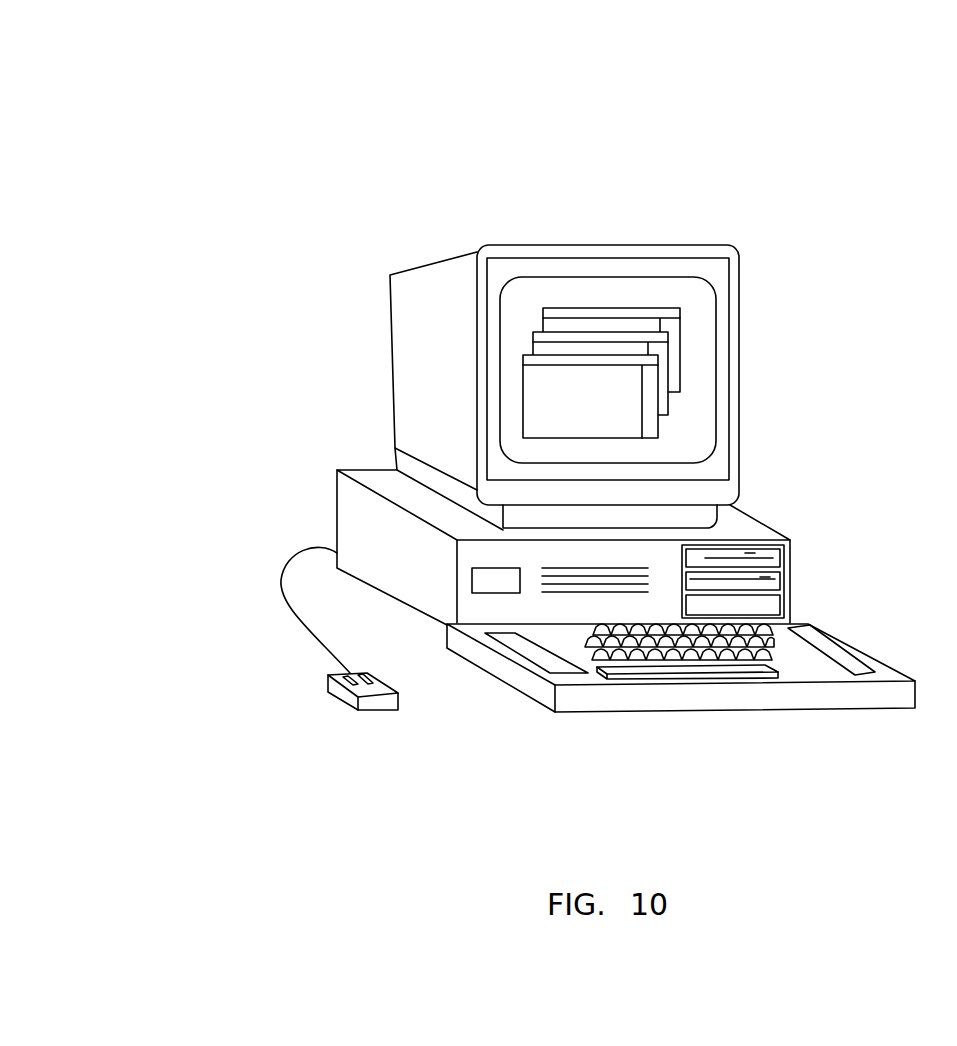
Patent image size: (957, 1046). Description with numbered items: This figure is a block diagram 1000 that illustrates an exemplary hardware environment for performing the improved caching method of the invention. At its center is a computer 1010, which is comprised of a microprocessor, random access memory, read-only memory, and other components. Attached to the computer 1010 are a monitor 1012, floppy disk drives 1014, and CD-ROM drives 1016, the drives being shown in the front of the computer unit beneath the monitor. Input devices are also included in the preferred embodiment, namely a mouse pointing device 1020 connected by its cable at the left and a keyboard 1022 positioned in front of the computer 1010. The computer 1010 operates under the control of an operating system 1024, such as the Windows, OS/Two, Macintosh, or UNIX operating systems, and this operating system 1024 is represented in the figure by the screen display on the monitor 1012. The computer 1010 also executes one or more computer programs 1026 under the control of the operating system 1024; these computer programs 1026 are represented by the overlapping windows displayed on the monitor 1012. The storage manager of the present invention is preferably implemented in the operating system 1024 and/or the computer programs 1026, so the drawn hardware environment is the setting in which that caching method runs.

The block diagram 1000 is at (755, 195).
The computer 1010 is at (758, 523).
The monitor 1012 is at (632, 247).
The floppy disk drives 1014 is at (772, 563).
The CD-ROM drives 1016 is at (773, 607).
The mouse pointing device 1020 is at (328, 693).
The keyboard 1022 is at (845, 698).
The operating system 1024 is at (525, 295).
The computer programs 1026 is at (693, 385).